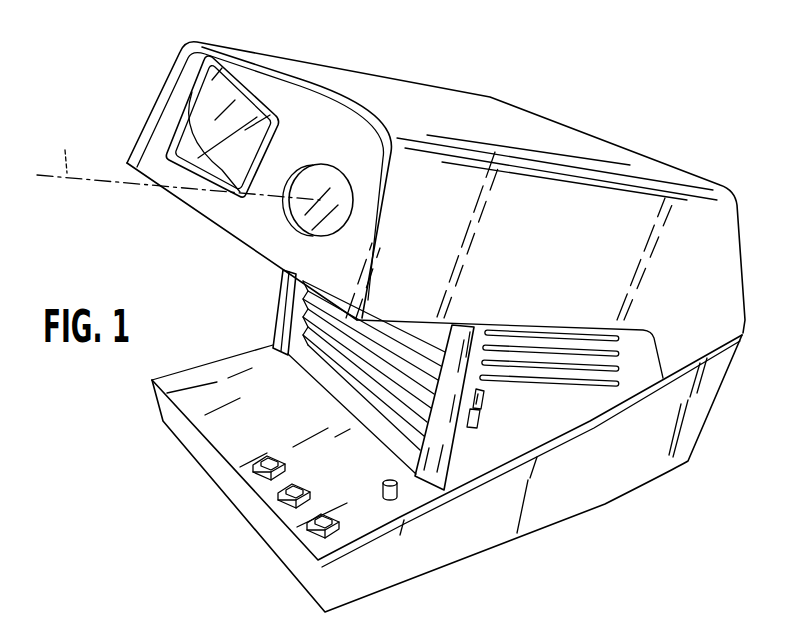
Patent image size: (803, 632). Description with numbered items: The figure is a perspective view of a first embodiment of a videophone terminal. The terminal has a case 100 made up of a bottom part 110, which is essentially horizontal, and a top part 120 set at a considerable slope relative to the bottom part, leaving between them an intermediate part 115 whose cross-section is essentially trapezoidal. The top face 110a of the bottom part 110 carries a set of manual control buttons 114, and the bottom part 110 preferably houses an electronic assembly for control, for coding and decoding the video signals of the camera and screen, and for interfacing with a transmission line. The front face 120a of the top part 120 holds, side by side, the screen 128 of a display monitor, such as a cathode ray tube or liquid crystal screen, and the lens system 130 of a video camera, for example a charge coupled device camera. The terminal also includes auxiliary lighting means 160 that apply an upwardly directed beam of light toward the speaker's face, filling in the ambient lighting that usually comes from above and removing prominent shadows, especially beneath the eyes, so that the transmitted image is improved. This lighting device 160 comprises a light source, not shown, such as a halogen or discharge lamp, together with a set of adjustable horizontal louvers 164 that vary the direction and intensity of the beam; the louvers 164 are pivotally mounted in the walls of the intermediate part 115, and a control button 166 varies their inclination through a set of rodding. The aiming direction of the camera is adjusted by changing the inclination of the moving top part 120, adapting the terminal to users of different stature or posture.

The case 100 is at (669, 117).
The bottom part 110 is at (580, 504).
The top face 110a is at (193, 413).
The manual control buttons 114 is at (265, 480).
The intermediate part 115 is at (547, 432).
The top part 120 is at (580, 261).
The front face 120a is at (227, 210).
The screen 128 is at (192, 123).
The lens system 130 is at (305, 140).
The auxiliary lighting means 160 is at (249, 304).
The adjustable horizontal louvers 164 is at (410, 378).
The control button 166 is at (473, 428).